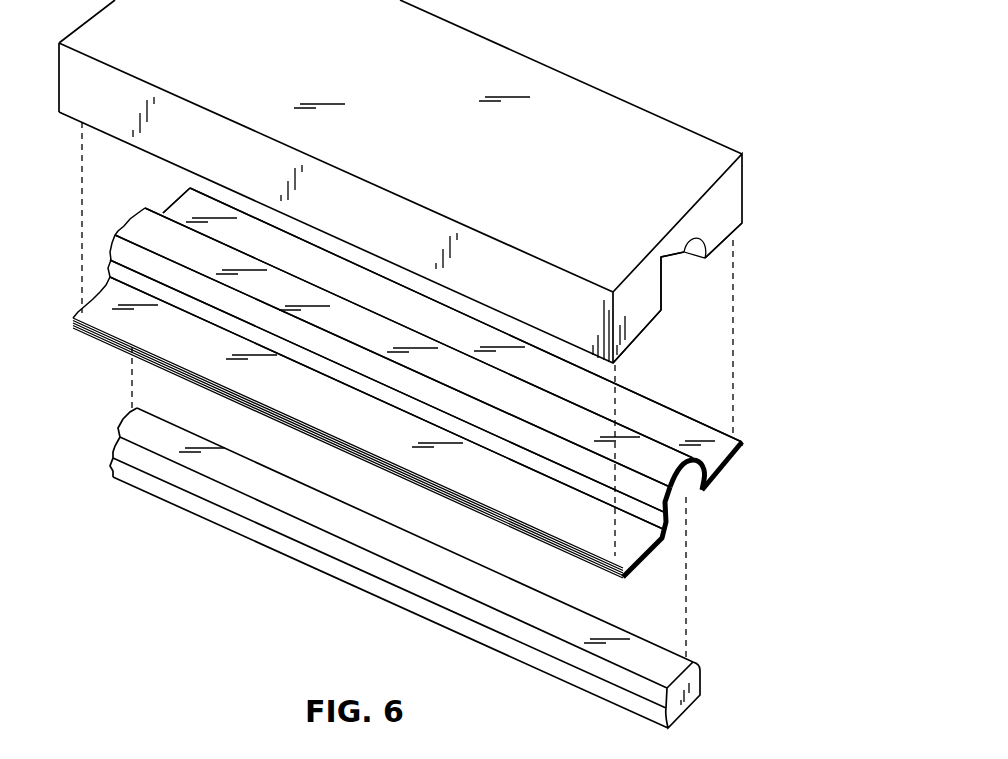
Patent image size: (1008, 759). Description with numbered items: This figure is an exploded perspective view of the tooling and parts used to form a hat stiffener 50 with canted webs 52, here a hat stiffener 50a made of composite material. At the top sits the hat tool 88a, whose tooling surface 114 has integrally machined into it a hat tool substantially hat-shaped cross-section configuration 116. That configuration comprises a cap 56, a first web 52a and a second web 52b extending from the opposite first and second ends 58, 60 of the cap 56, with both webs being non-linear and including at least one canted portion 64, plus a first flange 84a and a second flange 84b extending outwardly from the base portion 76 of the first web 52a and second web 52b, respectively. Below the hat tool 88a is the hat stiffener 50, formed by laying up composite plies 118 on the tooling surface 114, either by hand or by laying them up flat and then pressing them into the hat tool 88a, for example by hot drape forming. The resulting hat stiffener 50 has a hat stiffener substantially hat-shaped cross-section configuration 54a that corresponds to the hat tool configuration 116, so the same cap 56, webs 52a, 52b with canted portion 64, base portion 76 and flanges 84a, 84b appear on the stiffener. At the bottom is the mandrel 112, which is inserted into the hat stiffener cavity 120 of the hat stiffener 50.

The hat stiffener 50 is at (163, 207).
The hat stiffener 50a is at (140, 217).
The canted webs 52 is at (314, 357).
The first web 52a is at (657, 543).
The second web 52b is at (713, 468).
The hat stiffener substantially hat-shaped cross-section configuration 54a is at (668, 467).
The cap 56 is at (562, 416).
The first end 58 is at (410, 370).
The second end 60 is at (393, 320).
The canted portion 64 is at (632, 512).
The base portion 76 is at (706, 258).
The first flange 84a is at (660, 532).
The second flange 84b is at (742, 446).
The hat tool 88a is at (605, 112).
The mandrel 112 is at (550, 668).
The tooling surface 114 is at (641, 340).
The hat tool substantially hat-shaped cross-section configuration 116 is at (686, 268).
The composite plies 118 is at (73, 318).
The hat stiffener cavity 120 is at (695, 502).